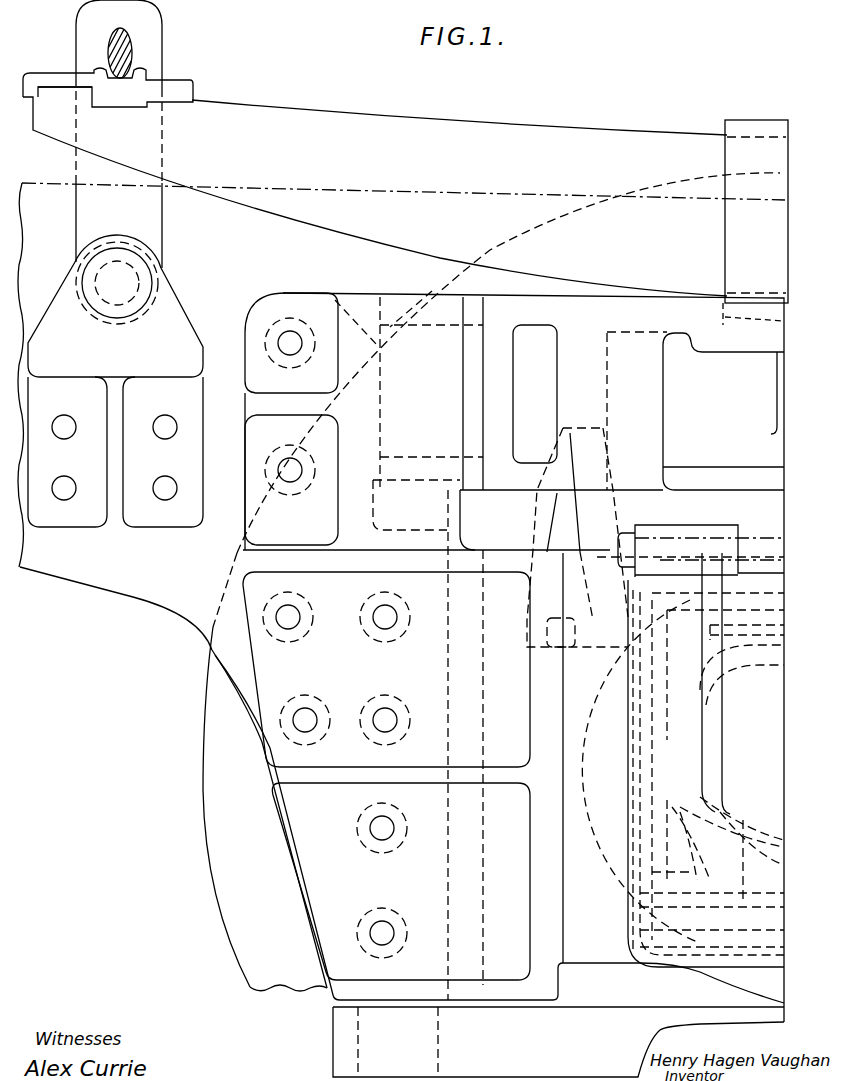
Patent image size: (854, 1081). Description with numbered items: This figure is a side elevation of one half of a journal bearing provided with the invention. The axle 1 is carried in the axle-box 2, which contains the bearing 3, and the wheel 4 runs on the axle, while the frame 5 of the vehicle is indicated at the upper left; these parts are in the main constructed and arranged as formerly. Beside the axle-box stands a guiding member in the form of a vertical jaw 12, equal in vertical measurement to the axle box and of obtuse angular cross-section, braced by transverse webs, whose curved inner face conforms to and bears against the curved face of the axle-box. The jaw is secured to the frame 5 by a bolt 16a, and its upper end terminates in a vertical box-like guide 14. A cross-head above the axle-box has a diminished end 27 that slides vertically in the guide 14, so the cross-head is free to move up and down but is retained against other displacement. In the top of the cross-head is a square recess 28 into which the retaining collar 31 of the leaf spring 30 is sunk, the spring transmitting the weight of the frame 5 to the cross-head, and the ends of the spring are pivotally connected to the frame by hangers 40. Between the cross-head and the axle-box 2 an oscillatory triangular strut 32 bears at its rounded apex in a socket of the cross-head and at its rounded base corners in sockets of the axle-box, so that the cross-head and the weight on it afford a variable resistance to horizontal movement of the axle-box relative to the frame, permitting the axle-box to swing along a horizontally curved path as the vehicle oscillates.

The axle 1 is at (692, 763).
The axle-box 2 is at (627, 957).
The bearing 3 is at (690, 705).
The wheel 4 is at (233, 927).
The frame 5 is at (36, 190).
The vertical jaw 12 is at (400, 776).
The vertical box-like guide 14 is at (363, 307).
The bolt 16a is at (293, 477).
The diminished end 27 is at (340, 303).
The square recess 28 is at (723, 318).
The leaf spring 30 is at (403, 182).
The retaining collar 31 is at (743, 125).
The oscillatory triangular strut 32 is at (577, 537).
The hanger 40 is at (115, 263).